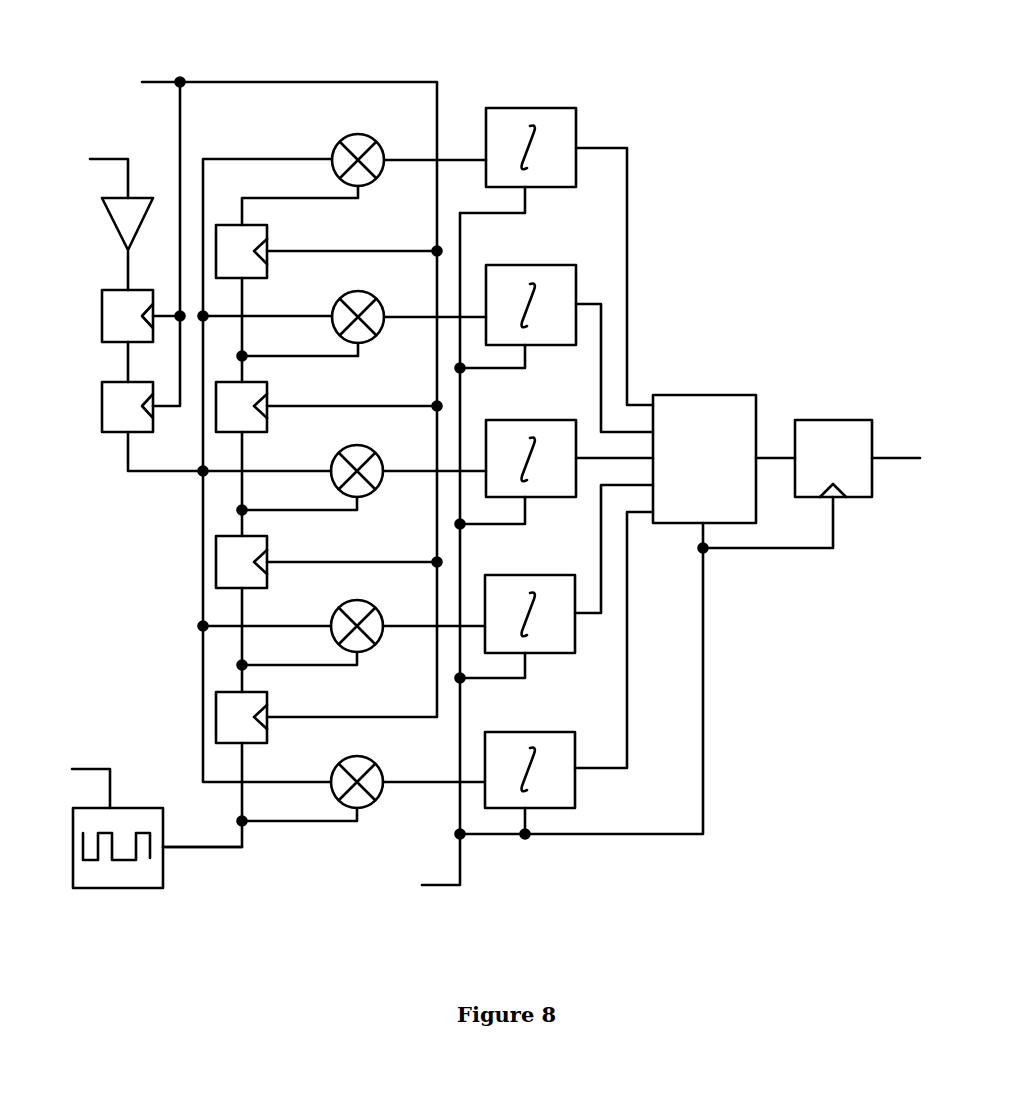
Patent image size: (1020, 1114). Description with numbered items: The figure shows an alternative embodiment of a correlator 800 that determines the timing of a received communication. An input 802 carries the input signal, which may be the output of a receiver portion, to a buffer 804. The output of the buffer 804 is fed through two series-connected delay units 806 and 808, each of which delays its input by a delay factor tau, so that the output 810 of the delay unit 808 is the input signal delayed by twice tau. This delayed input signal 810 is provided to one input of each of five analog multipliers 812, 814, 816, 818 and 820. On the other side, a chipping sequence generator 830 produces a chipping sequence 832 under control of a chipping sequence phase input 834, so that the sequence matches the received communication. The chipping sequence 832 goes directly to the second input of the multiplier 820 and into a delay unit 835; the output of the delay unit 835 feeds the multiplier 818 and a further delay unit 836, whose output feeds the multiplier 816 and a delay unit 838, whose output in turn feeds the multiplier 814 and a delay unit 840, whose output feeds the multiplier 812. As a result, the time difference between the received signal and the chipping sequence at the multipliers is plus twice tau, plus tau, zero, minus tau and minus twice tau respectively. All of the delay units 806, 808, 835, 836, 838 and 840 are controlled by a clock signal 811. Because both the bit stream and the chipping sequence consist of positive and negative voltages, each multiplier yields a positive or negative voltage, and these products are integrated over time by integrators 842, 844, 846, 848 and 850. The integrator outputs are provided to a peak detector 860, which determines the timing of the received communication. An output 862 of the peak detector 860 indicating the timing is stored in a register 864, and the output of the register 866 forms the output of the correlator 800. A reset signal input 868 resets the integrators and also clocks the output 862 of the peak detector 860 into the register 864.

The correlator 800 is at (481, 485).
The input 802 is at (90, 158).
The buffer 804 is at (122, 216).
The delay unit 806 is at (102, 316).
The delay unit 808 is at (112, 430).
The output of the delay unit 810 is at (158, 472).
The clock signal 811 is at (160, 81).
The analog multiplier 812 is at (362, 138).
The analog multiplier 814 is at (358, 296).
The analog multiplier 816 is at (360, 452).
The analog multiplier 818 is at (360, 607).
The analog multiplier 820 is at (360, 810).
The chipping sequence generator 830 is at (135, 880).
The chipping sequence 832 is at (203, 849).
The chipping sequence phase input 834 is at (82, 768).
The delay unit 835 is at (257, 702).
The delay unit 836 is at (257, 549).
The delay unit 838 is at (257, 394).
The delay unit 840 is at (257, 239).
The integrator 842 is at (578, 123).
The integrator 844 is at (532, 268).
The integrator 846 is at (520, 423).
The integrator 848 is at (512, 581).
The integrator 850 is at (515, 733).
The peak detector 860 is at (698, 396).
The output of the peak detector 862 is at (772, 455).
The register 864 is at (817, 424).
The output of the register 866 is at (895, 459).
The reset signal input 868 is at (433, 888).